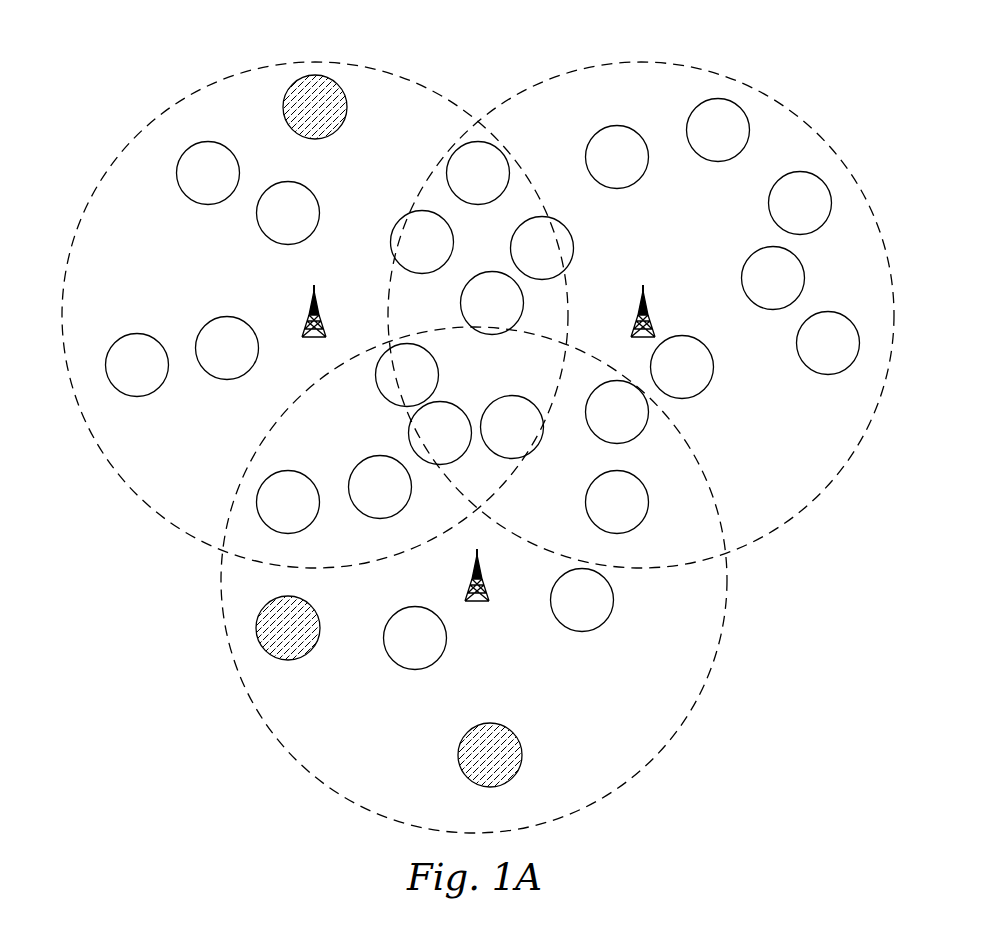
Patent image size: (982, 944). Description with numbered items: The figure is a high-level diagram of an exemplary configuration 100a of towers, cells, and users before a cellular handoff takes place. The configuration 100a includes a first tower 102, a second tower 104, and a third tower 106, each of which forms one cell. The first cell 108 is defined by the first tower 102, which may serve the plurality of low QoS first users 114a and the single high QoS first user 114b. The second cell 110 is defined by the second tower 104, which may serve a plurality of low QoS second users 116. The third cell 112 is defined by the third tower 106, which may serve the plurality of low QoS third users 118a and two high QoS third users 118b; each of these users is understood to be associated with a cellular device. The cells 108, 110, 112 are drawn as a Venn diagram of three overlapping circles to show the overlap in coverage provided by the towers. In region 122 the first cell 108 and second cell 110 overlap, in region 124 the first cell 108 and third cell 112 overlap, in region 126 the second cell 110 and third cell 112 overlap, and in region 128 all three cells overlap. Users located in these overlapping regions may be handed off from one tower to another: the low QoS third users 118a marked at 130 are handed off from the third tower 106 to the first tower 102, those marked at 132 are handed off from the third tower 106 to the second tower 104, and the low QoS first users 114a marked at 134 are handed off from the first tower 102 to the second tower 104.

The configuration 100a is at (893, 98).
The first tower 102 is at (311, 303).
The second tower 104 is at (641, 303).
The third tower 106 is at (474, 570).
The first cell 108 is at (112, 466).
The second cell 110 is at (832, 481).
The third cell 112 is at (278, 740).
The low QoS first users 114a is at (189, 182).
The high QoS first user 114b is at (296, 116).
The low QoS second users 116 is at (603, 166).
The low QoS third users 118a is at (269, 511).
The high QoS third users 118b is at (269, 637).
The region 122 is at (401, 317).
The region 124 is at (324, 411).
The region 126 is at (513, 511).
The region 128 is at (506, 354).
The low QoS third users handed off to first tower 130 is at (297, 470).
The low QoS third users handed off to second tower 132 is at (453, 404).
The low QoS first users handed off to second tower 134 is at (503, 143).